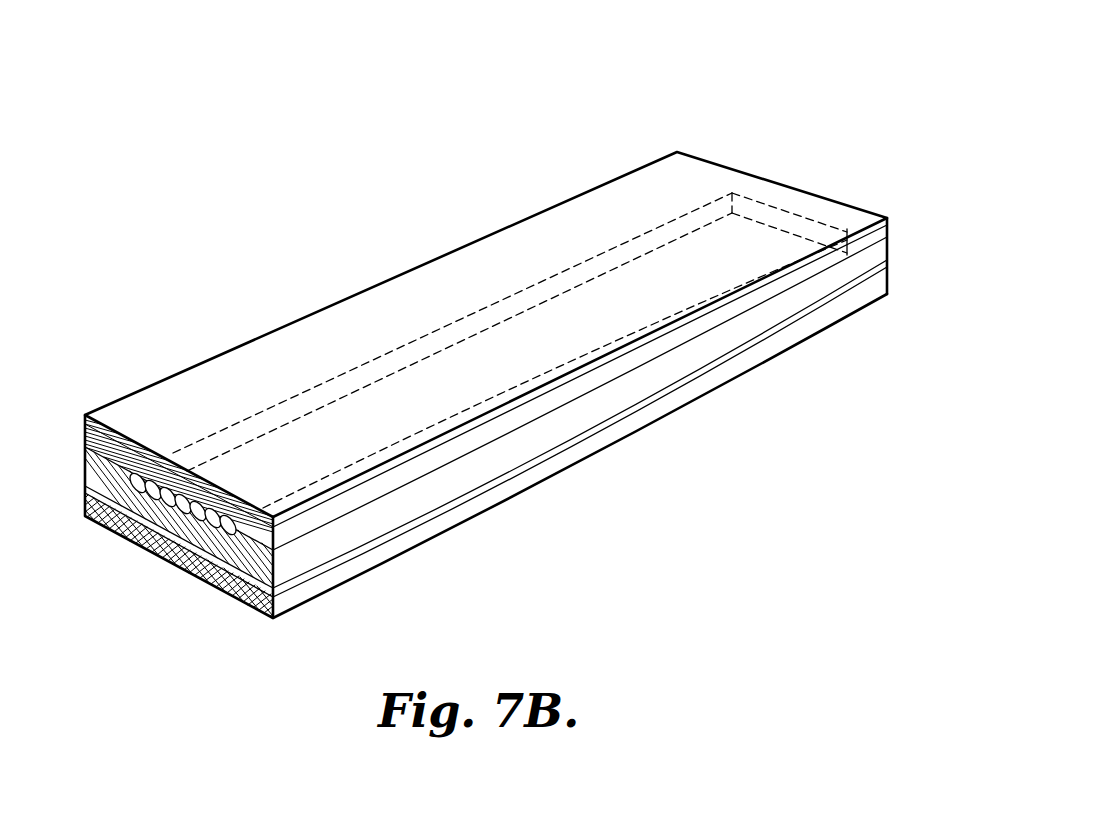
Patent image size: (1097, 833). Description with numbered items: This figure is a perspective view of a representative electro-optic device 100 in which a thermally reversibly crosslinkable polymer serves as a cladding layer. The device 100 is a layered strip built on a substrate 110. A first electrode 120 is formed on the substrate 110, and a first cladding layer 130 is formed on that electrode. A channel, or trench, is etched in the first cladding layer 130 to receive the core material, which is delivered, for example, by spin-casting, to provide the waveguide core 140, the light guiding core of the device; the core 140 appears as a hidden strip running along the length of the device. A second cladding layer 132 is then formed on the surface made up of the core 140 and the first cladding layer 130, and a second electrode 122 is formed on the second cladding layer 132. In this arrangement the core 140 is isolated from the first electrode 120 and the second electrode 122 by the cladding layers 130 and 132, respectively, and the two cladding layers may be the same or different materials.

The electro-optic device 100 is at (768, 107).
The substrate 110 is at (545, 470).
The first electrode 120 is at (610, 422).
The second electrode 122 is at (698, 173).
The first cladding layer 130 is at (652, 385).
The second cladding layer 132 is at (692, 338).
The core 140 is at (475, 313).